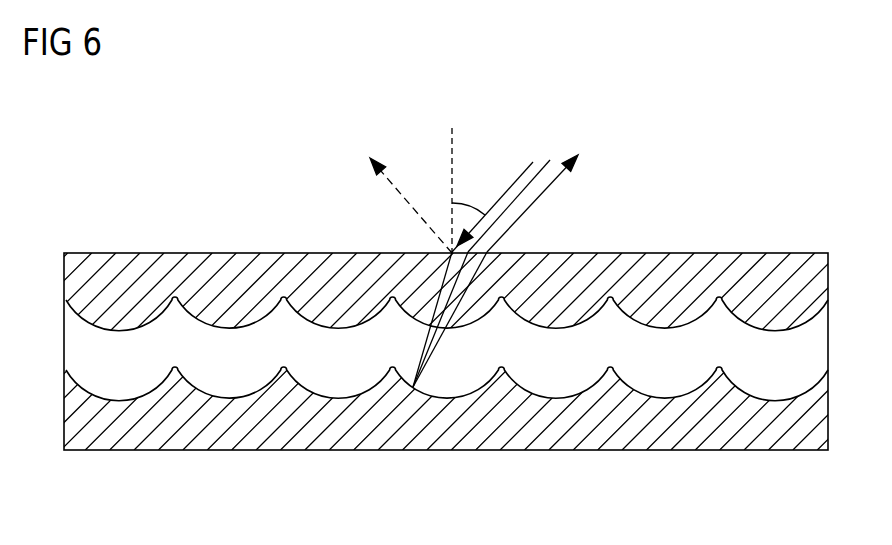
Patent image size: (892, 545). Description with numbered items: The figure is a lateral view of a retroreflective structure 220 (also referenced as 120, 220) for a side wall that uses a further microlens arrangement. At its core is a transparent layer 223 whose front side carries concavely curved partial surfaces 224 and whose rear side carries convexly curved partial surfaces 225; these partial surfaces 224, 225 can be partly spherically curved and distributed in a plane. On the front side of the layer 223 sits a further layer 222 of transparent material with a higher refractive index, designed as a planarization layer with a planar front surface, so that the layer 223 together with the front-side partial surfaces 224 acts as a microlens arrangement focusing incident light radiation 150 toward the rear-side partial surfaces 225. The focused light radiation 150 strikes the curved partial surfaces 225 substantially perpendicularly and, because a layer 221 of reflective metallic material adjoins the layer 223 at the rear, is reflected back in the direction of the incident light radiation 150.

The optical element 120 is at (446, 305).
The retroreflective structure 220 is at (446, 305).
The light radiation 150 is at (513, 184).
The layer composed of a reflective metallic material 221 is at (247, 433).
The further layer 222 is at (170, 256).
The transparent layer 223 is at (236, 348).
The concavely curved partial surfaces 224 is at (331, 329).
The convexly curved partial surfaces 225 is at (347, 400).